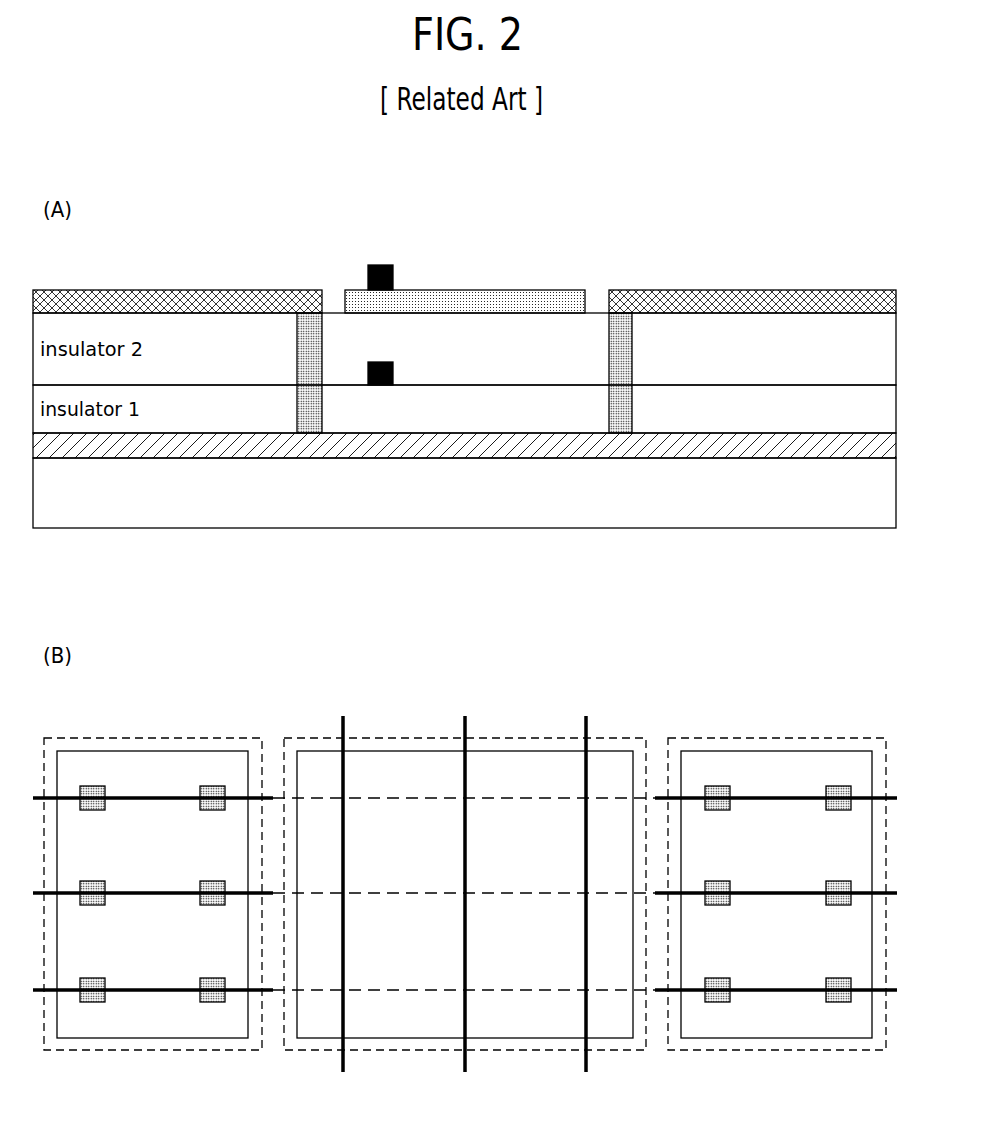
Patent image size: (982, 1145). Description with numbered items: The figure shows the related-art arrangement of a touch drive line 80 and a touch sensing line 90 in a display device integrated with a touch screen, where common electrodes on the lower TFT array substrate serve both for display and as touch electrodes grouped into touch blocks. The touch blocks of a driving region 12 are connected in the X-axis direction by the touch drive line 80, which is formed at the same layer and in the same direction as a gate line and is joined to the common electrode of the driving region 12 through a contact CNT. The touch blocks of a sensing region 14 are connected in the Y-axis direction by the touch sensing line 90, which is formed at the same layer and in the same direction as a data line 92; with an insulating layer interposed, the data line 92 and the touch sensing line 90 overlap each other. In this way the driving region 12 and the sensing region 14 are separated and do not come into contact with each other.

The driving region 12 is at (175, 300).
The sensing region 14 is at (528, 300).
The touch drive line 80 is at (175, 447).
The touch sensing line 90 is at (393, 281).
The data line 92 is at (393, 376).
The contact CNT is at (296, 372).